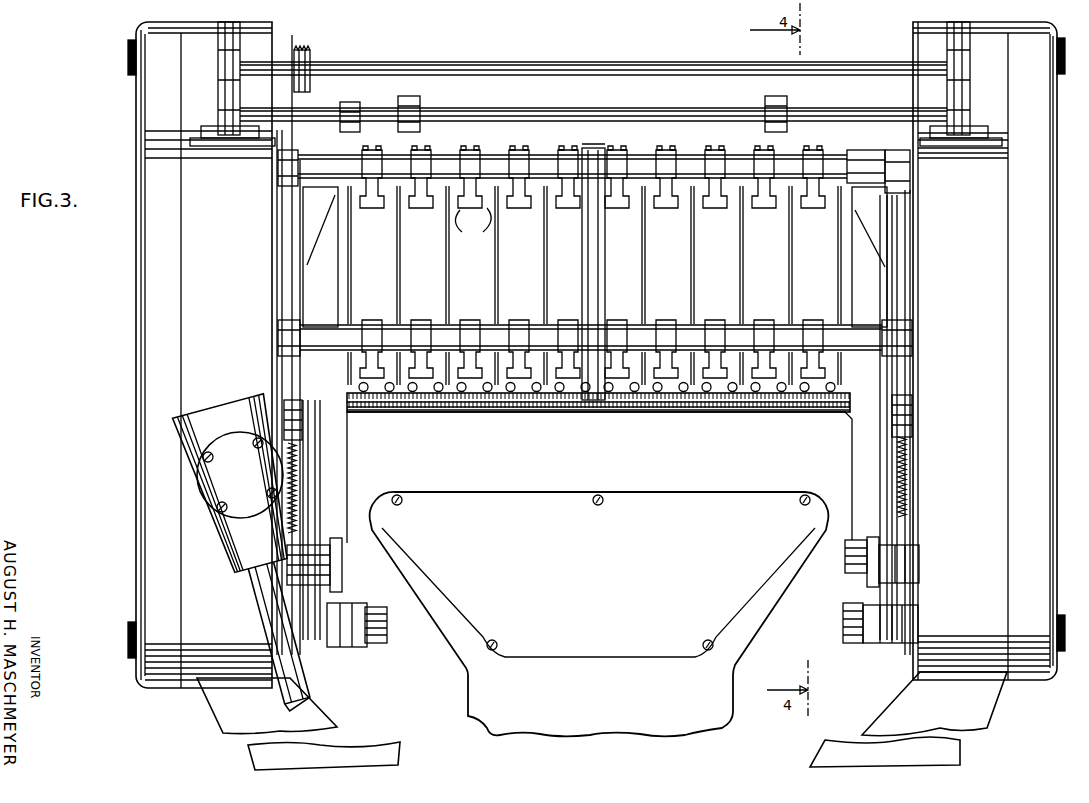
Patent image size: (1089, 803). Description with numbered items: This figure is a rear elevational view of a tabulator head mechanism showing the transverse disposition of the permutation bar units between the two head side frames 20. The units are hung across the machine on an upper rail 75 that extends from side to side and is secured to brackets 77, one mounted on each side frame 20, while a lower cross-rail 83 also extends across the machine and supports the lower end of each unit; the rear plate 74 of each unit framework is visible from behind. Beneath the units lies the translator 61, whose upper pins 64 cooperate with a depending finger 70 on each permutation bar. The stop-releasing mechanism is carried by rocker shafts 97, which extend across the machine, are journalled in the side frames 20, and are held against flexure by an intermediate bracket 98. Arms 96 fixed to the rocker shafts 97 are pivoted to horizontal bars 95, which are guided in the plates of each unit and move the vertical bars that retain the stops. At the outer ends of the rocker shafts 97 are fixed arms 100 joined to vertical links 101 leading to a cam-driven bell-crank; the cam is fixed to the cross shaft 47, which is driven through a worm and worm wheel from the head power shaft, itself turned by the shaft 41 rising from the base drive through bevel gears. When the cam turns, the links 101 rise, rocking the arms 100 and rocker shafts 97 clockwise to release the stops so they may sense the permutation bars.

The side frames 20 is at (198, 213).
The shaft 41 is at (317, 699).
The cross shaft 47 is at (397, 592).
The translator 61 is at (485, 630).
The upper pins 64 is at (630, 413).
The depending finger 70 is at (355, 400).
The rear plate 74 is at (462, 270).
The upper rail 75 is at (860, 168).
The brackets 77 is at (318, 213).
The lower cross-rail 83 is at (866, 398).
The horizontal bars 95 is at (498, 212).
The arms 96 is at (565, 192).
The rocker shafts 97 is at (491, 165).
The intermediate bracket 98 is at (604, 272).
The arms 100 is at (278, 168).
The vertical links 101 is at (337, 443).